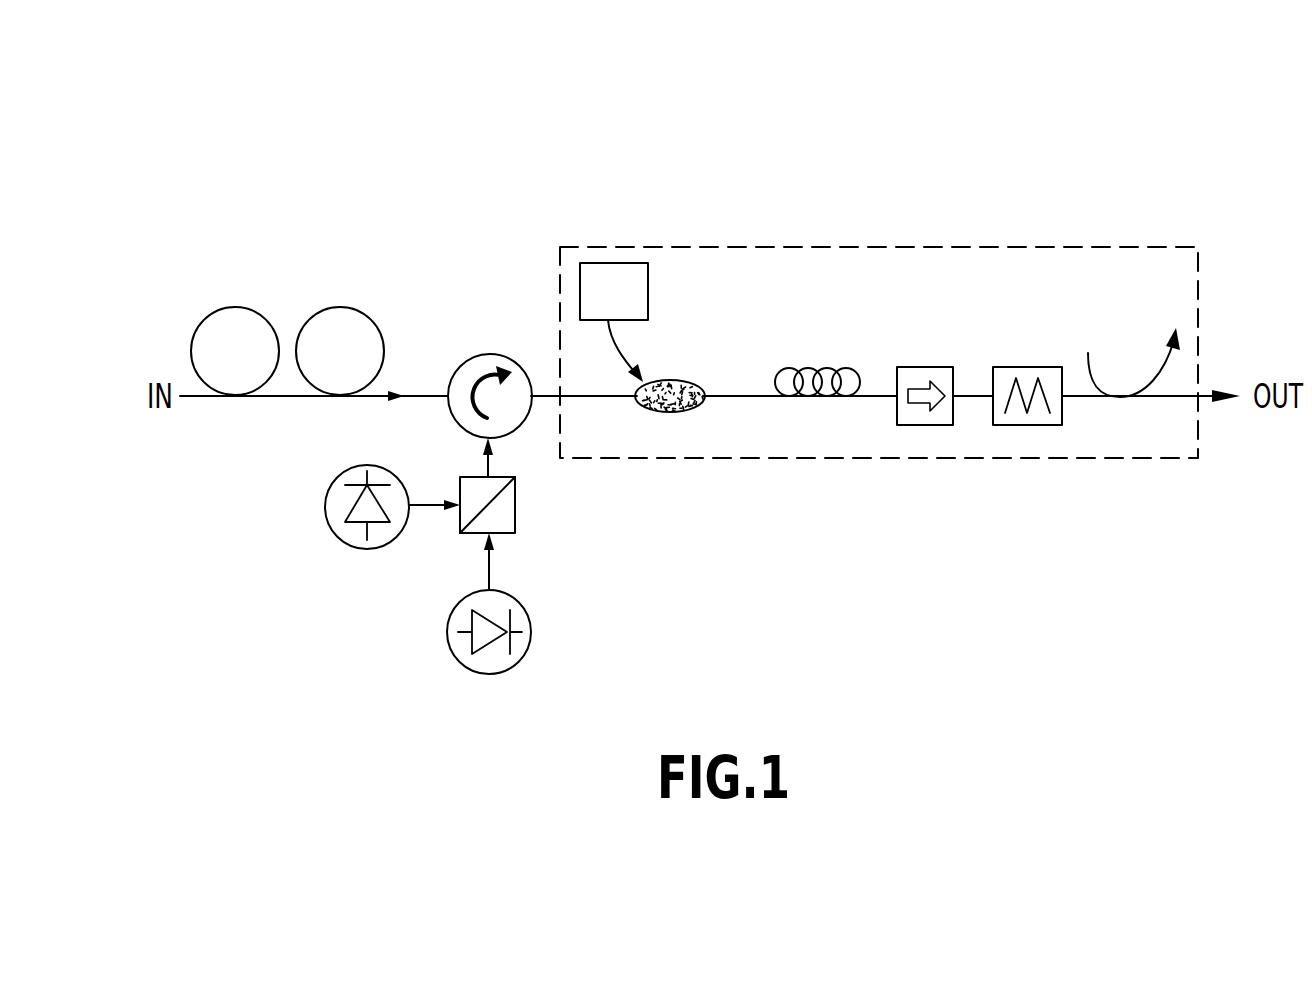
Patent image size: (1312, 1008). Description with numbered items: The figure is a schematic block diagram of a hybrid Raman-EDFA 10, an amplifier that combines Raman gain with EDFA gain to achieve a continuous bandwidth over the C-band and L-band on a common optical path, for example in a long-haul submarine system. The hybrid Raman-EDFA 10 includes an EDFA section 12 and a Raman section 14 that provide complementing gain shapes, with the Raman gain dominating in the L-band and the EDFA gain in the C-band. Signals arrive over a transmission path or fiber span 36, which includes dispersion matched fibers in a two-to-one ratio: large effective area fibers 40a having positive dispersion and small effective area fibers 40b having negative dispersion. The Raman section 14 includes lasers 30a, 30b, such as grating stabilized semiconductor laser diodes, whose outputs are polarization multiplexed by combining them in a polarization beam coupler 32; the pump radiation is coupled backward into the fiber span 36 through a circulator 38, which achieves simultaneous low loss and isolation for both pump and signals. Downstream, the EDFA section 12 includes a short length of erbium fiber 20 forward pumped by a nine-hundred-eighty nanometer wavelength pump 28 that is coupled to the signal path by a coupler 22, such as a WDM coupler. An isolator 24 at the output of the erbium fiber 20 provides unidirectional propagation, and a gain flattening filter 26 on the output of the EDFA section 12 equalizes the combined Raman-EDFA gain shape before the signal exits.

The hybrid Raman-EDFA 10 is at (713, 167).
The EDFA section 12 is at (925, 247).
The Raman section 14 is at (400, 705).
The erbium fiber 20 is at (808, 372).
The coupler 22 is at (685, 412).
The isolator 24 is at (922, 425).
The gain flattening filter 26 is at (1025, 425).
The 980 nm wavelength pump 28 is at (648, 290).
The laser 30a is at (325, 503).
The laser 30b is at (448, 633).
The polarization beam coupler 32 is at (515, 508).
The fiber span 36 is at (287, 278).
The circulator 38 is at (478, 350).
The large effective area fibers 40a is at (213, 311).
The small effective area fibers 40b is at (351, 306).